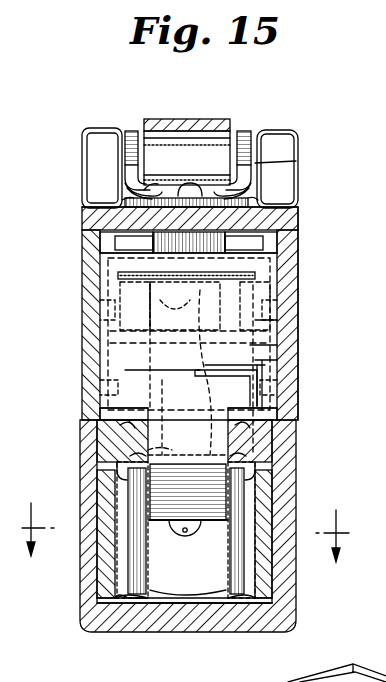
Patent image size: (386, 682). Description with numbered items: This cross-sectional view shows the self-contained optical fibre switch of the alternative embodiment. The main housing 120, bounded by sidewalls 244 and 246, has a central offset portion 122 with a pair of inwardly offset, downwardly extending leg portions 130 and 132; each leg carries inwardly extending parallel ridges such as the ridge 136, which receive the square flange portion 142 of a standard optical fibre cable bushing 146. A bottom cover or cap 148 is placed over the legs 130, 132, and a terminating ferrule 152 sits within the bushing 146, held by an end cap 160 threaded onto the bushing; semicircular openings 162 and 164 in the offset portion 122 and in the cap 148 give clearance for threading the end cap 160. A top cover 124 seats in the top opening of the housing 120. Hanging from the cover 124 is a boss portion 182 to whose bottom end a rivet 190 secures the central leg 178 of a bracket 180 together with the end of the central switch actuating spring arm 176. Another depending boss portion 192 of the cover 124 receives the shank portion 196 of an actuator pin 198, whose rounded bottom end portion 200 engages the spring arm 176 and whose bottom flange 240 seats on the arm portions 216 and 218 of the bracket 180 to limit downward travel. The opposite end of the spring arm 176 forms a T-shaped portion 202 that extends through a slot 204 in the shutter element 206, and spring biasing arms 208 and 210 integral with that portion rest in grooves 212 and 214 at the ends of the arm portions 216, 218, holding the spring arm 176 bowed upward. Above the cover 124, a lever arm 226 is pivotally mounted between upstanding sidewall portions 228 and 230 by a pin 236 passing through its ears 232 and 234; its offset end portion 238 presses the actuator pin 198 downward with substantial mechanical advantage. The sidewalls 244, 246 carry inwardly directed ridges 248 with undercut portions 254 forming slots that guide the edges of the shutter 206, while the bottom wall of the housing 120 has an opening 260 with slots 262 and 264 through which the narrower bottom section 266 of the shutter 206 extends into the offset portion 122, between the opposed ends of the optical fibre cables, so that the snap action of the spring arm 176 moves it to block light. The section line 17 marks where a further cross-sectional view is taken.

The section line 17- 17 is at (186, 532).
The main housing 120 is at (88, 272).
The central offset portion 122 is at (292, 473).
The top cover 124 is at (300, 212).
The leg portion 130 is at (72, 534).
The leg portion 132 is at (268, 580).
The ridge 136 is at (126, 510).
The square flange portion 142 is at (247, 605).
The optical fibre cable bushing 146 is at (128, 602).
The bottom cover 148 is at (88, 620).
The terminating ferrule 152 is at (214, 545).
The end cap 160 is at (181, 605).
The semicircular opening 162 is at (155, 370).
The semicircular opening 164 is at (218, 605).
The central switch actuating spring arm 176 is at (209, 378).
The central leg 178 is at (161, 367).
The bracket 180 is at (277, 364).
The boss portion 182 is at (235, 379).
The rivet 190 is at (197, 372).
The depending boss portion 192 is at (92, 220).
The shank portion 196 is at (188, 185).
The actuator pin 198 is at (105, 244).
The rounded bottom end portion 200 is at (195, 292).
The T-shaped portion 202 is at (288, 284).
The slot 204 is at (118, 276).
The shutter element 206 is at (222, 244).
The spring biasing arm 208 is at (110, 331).
The spring biasing arm 210 is at (277, 322).
The groove 212 is at (100, 314).
The groove 214 is at (277, 308).
The arm portion 216 is at (110, 345).
The arm portion 218 is at (277, 346).
The lever arm 226 is at (175, 119).
The upstanding sidewall portion 228 is at (98, 128).
The upstanding sidewall portion 230 is at (280, 131).
The ear 232 is at (131, 131).
The ear 234 is at (246, 131).
The pin 236 is at (296, 161).
The offset end portion 238 is at (150, 180).
The bottom flange 240 is at (270, 262).
The sidewall 244 is at (100, 384).
The sidewall 246 is at (277, 388).
The ridge 248 is at (100, 438).
The undercut portion 254 is at (100, 414).
The opening 260 is at (236, 370).
The slot 262 is at (140, 452).
The slot 264 is at (255, 458).
The bottom section 266 is at (163, 520).